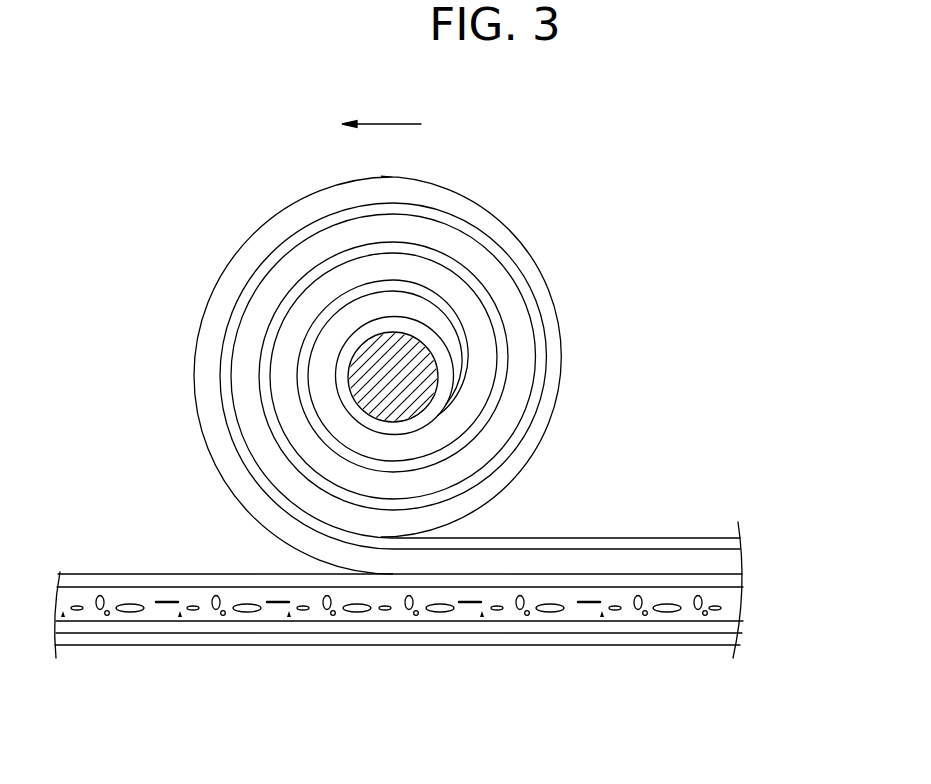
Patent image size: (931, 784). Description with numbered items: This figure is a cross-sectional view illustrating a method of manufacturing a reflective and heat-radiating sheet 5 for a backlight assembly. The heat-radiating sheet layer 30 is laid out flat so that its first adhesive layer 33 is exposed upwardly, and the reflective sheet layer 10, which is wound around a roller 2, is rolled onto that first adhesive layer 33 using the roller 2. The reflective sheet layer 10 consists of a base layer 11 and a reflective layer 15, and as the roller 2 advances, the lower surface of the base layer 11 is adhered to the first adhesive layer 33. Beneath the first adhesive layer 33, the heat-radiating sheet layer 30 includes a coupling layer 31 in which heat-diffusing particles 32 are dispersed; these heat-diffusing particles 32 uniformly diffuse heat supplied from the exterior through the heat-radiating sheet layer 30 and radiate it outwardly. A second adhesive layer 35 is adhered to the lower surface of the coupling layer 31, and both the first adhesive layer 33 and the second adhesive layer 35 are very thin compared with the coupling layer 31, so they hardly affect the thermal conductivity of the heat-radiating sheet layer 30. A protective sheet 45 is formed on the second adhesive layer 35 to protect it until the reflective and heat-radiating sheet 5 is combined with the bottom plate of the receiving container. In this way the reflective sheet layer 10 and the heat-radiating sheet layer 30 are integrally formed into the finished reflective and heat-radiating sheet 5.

The roller 2 is at (409, 378).
The reflective and heat-radiating sheet 5 is at (465, 440).
The reflective sheet layer 10 is at (536, 384).
The reflective layer 15 is at (725, 543).
The base layer 11 is at (722, 562).
The heat-radiating sheet layer 30 is at (454, 440).
The first adhesive layer 33 is at (725, 581).
The coupling layer 31 is at (433, 651).
The heat-diffusing particles 32 is at (352, 612).
The second adhesive layer 35 is at (725, 625).
The protective sheet 45 is at (185, 640).